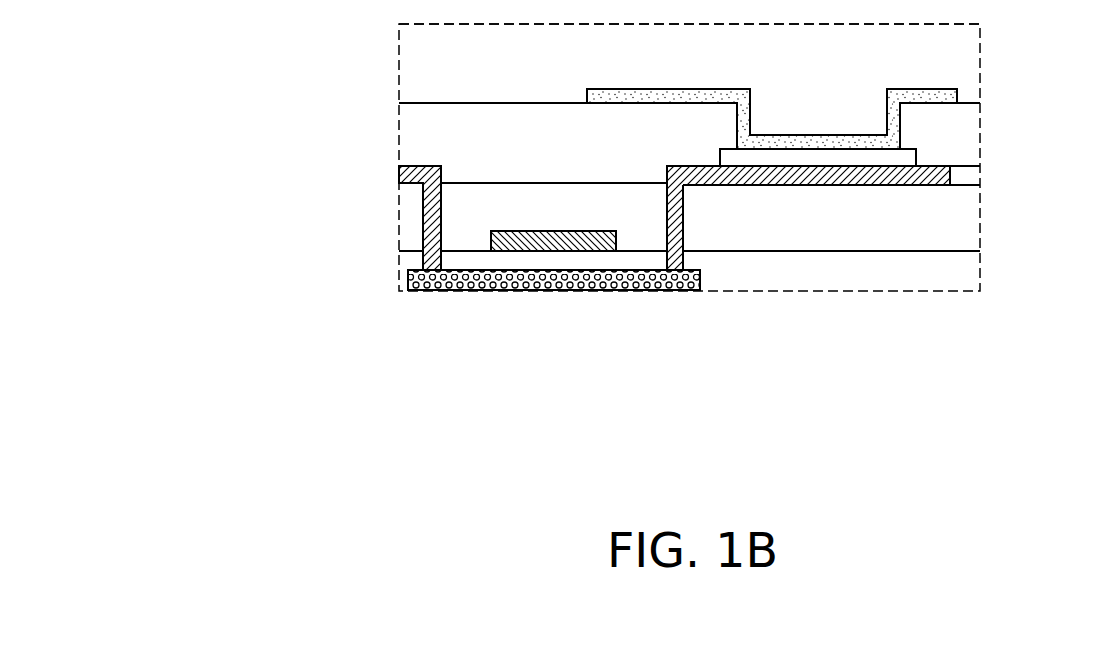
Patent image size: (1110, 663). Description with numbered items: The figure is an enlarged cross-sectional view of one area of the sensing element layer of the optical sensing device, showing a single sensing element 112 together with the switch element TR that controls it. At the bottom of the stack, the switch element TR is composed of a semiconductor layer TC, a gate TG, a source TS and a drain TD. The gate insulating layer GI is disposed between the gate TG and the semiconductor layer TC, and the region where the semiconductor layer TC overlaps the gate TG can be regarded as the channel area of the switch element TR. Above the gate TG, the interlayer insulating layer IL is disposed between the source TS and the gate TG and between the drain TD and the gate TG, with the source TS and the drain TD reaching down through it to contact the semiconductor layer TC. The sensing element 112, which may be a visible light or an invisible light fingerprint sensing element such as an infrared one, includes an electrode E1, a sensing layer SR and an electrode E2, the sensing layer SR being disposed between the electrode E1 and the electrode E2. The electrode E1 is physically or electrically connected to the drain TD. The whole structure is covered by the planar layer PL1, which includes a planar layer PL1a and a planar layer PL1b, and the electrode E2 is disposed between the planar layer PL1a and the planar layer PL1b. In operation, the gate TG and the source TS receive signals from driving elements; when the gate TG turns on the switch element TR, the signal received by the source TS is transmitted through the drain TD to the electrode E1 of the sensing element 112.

The planar layer PL1 is at (615, 88).
The planar layer PL1a is at (410, 136).
The planar layer PL1b is at (410, 62).
The interlayer insulating layer IL is at (410, 217).
The gate insulating layer GI is at (410, 260).
The switch element TR is at (549, 282).
The source TS is at (441, 174).
The semiconductor layer TC is at (513, 290).
The gate TG is at (572, 243).
The drain TD is at (659, 258).
The sensing element 112 is at (843, 135).
The electrode E1 is at (864, 175).
The sensing layer SR is at (908, 158).
The electrode E2 is at (955, 97).